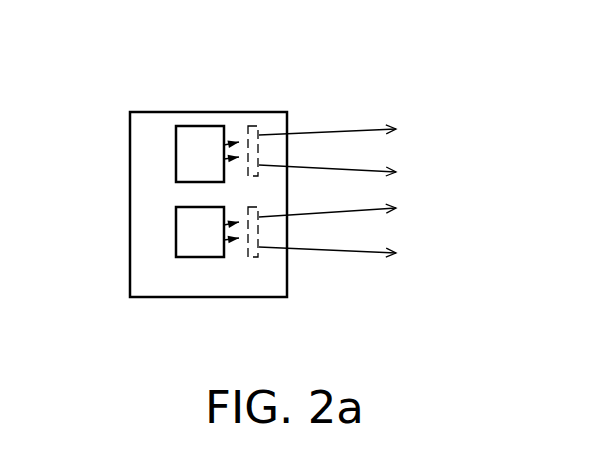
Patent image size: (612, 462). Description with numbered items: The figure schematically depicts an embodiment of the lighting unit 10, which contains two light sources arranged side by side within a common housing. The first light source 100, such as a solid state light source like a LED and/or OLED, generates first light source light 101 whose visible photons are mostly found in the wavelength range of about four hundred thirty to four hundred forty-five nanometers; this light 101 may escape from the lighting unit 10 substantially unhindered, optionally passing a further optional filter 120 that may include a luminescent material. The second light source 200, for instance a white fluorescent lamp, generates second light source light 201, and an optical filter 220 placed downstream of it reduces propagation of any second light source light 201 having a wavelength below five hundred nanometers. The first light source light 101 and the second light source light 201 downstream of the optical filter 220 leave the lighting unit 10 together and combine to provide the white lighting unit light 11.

The lighting unit 10 is at (200, 88).
The lighting unit light 11 is at (397, 295).
The first light source 100 is at (147, 158).
The second light source 200 is at (147, 243).
The first light source light 101 is at (238, 141).
The second light source light 201 is at (236, 240).
The further optional filter 120 is at (267, 117).
The optical filter 220 is at (265, 266).